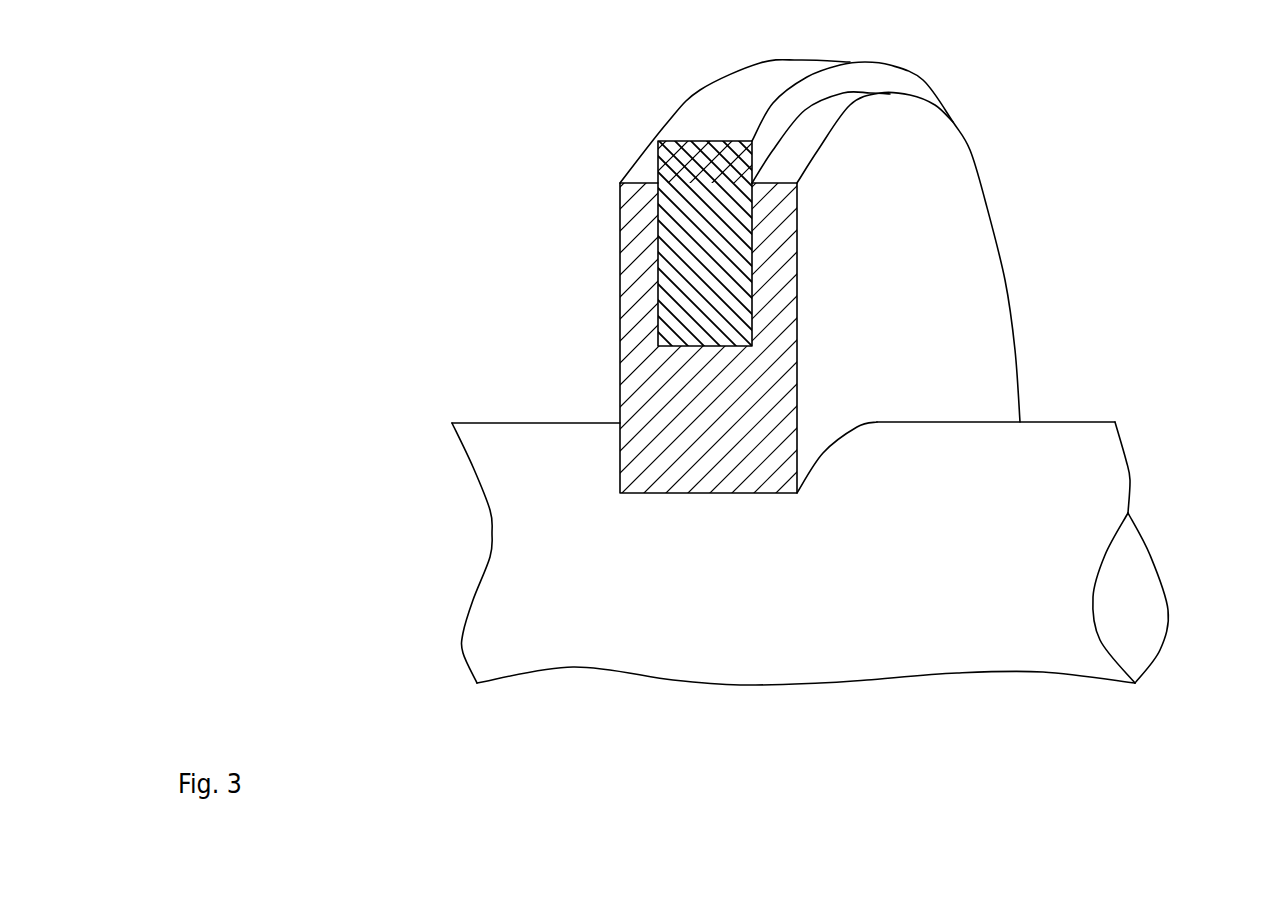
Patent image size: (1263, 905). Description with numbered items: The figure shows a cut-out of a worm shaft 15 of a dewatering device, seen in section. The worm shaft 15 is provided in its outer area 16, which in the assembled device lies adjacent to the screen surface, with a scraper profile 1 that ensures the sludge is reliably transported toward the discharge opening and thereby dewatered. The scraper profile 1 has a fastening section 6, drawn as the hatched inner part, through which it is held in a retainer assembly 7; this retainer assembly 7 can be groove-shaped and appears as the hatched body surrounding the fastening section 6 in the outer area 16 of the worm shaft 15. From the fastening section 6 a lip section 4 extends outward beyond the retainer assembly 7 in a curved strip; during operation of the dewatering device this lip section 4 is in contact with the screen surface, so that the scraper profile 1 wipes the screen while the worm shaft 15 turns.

The scraper profile 1 is at (677, 325).
The lip section 4 is at (890, 82).
The fastening section 6 is at (733, 273).
The retainer assembly 7 is at (752, 327).
The worm shaft 15 is at (1122, 336).
The outer area 16 is at (591, 194).